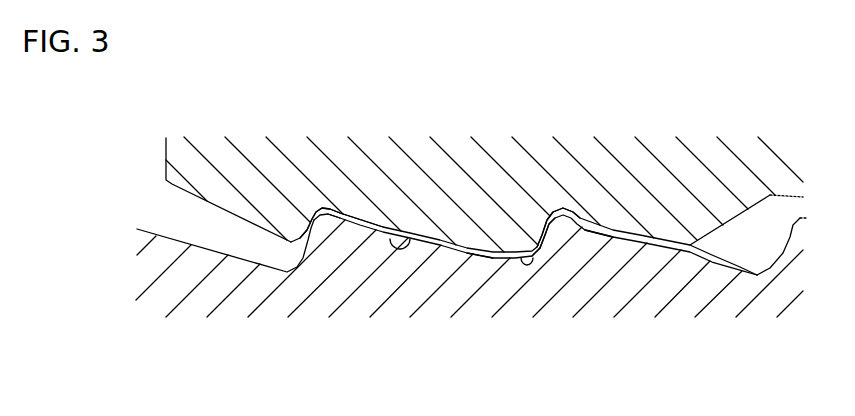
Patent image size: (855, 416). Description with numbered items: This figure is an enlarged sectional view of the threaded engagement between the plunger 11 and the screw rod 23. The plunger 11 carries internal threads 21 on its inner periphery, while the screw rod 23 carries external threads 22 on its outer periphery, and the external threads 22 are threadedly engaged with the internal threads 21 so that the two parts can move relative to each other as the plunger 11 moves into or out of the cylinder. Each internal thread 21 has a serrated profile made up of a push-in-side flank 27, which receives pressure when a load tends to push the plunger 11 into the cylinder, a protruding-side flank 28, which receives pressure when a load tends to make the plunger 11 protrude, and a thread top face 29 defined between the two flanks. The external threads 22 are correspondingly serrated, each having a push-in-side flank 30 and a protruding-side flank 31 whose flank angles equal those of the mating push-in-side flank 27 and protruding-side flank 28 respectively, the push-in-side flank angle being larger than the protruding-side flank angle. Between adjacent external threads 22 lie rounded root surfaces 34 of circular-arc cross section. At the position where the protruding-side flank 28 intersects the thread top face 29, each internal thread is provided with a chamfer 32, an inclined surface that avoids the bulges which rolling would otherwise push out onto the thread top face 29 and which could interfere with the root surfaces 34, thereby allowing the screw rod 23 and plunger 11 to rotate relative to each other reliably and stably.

The plunger 11 is at (164, 163).
The internal threads 21 is at (498, 250).
The external threads 22 is at (335, 245).
The screw rod 23 is at (148, 272).
The push-in-side flank 27 is at (388, 226).
The protruding-side flank 28 is at (577, 212).
The thread top face 29 is at (489, 258).
The push-in-side flank 30 is at (441, 244).
The protruding-side flank 31 is at (541, 220).
The chamfer 32 is at (531, 250).
The root surfaces 34 is at (525, 272).